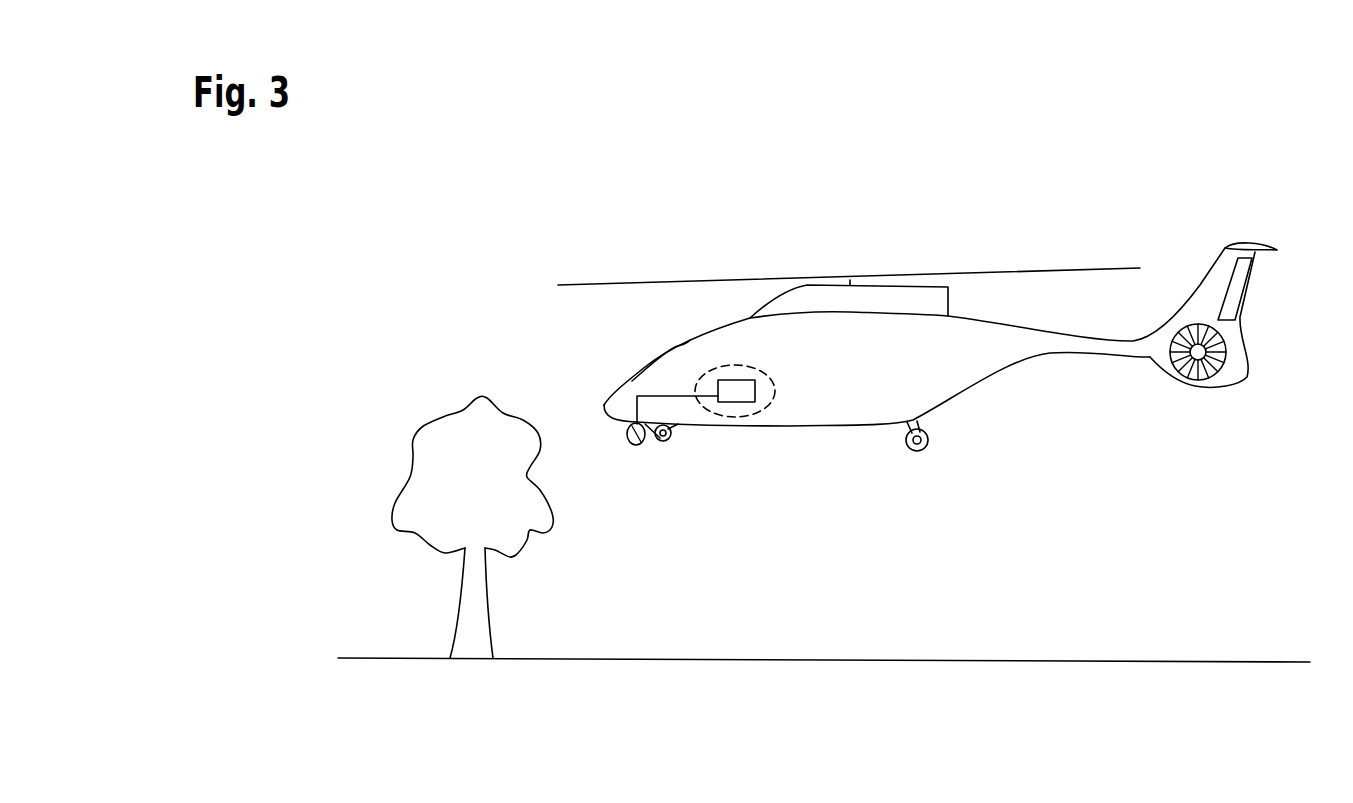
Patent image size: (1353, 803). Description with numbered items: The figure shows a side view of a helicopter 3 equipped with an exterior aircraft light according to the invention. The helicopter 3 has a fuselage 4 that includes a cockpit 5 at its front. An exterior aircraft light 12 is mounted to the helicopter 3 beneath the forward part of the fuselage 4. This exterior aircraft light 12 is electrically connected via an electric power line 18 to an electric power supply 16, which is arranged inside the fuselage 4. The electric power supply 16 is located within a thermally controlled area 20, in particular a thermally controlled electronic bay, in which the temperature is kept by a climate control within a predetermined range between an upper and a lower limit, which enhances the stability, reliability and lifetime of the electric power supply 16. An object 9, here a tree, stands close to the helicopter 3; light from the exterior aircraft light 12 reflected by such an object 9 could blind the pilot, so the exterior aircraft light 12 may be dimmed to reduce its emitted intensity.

The helicopter 3 is at (1097, 212).
The fuselage 4 is at (885, 435).
The cockpit 5 is at (647, 360).
The object 9 is at (437, 398).
The exterior aircraft light 12 is at (630, 443).
The electric power supply 16 is at (737, 392).
The electric power line 18 is at (680, 398).
The thermally controlled area 20 is at (785, 398).